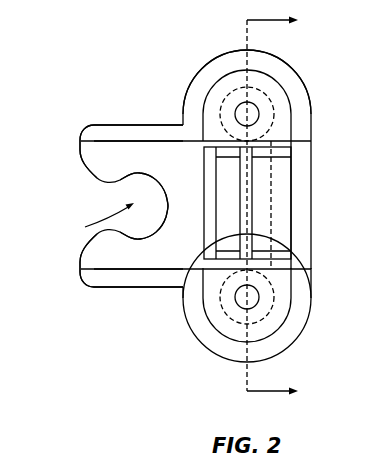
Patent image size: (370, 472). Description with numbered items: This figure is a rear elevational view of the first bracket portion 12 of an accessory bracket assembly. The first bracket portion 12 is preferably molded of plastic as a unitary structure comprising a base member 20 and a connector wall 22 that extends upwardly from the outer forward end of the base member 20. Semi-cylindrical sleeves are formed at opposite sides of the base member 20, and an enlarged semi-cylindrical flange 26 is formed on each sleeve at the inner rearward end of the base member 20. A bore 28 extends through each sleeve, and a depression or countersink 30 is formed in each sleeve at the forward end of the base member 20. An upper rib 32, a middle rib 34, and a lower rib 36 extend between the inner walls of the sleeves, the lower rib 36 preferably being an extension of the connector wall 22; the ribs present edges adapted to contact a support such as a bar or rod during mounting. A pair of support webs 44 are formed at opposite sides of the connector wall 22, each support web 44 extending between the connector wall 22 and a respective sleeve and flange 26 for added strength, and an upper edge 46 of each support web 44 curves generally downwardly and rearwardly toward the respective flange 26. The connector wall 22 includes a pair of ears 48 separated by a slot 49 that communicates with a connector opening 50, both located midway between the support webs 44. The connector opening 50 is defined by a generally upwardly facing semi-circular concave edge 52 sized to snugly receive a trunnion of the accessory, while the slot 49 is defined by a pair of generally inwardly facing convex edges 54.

The first bracket portion 12 is at (203, 58).
The base member 20 is at (283, 60).
The connector wall 22 is at (80, 157).
The semi-cylindrical flange 26 is at (238, 57).
The bore 28 is at (252, 106).
The countersink 30 is at (222, 106).
The upper rib 32 is at (210, 172).
The middle rib 34 is at (248, 200).
The lower rib 36 is at (306, 208).
The support web 44 is at (126, 124).
The upper edge 46 is at (166, 131).
The ear 48 is at (91, 150).
The slot 49 is at (97, 193).
The connector opening 50 is at (96, 220).
The concave edge 52 is at (150, 239).
The convex edge 54 is at (85, 170).